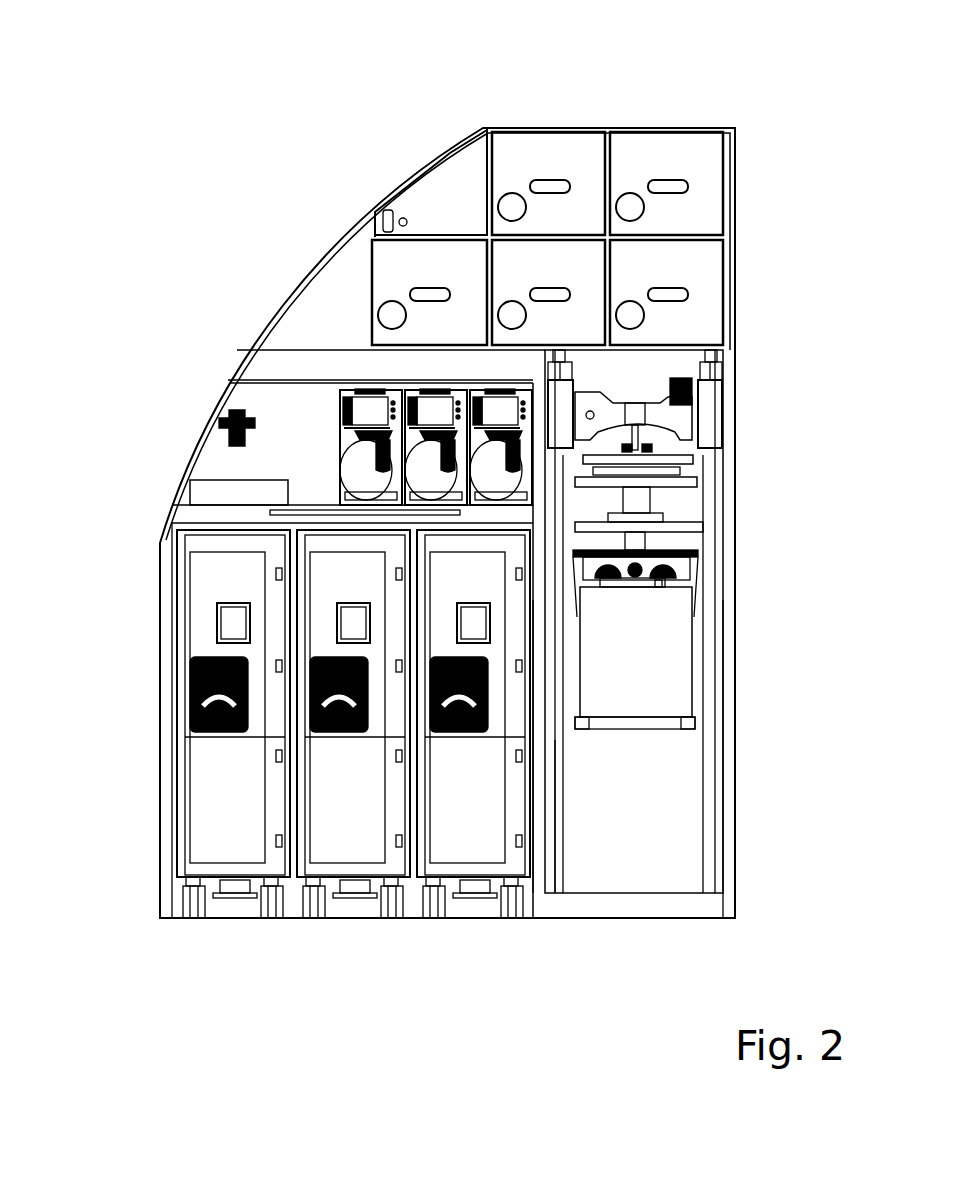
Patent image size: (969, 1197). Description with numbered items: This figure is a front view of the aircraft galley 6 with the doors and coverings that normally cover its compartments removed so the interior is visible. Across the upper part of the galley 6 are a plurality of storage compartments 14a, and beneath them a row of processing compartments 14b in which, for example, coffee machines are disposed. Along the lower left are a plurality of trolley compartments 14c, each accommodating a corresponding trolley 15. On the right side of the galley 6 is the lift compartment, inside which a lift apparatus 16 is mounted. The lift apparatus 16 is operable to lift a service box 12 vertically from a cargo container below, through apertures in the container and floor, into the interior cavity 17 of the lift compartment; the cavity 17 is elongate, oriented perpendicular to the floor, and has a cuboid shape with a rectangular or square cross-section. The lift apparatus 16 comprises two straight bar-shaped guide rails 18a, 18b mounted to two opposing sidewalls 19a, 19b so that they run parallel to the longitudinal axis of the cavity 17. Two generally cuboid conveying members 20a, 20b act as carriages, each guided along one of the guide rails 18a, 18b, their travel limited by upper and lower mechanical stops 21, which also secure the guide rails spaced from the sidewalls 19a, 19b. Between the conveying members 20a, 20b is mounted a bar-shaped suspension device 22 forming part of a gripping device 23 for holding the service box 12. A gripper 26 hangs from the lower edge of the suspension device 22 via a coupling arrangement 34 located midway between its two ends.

The galley 6 is at (802, 168).
The storage compartments 14a is at (543, 145).
The processing compartments 14b is at (363, 412).
The trolley compartments 14c is at (232, 893).
The trolley 15 is at (357, 822).
The lift apparatus 16 is at (732, 511).
The interior cavity 17 is at (654, 833).
The guide rail 18a is at (712, 827).
The guide rail 18b is at (557, 860).
The sidewall 19a is at (725, 730).
The sidewall 19b is at (535, 858).
The conveying member 20a is at (707, 408).
The conveying member 20b is at (567, 392).
The mechanical stops 21 is at (712, 372).
The suspension device 22 is at (597, 413).
The gripping device 23 is at (714, 463).
The coupling arrangement 34 is at (706, 489).
The gripper 26 is at (715, 556).
The service box 12 is at (662, 652).